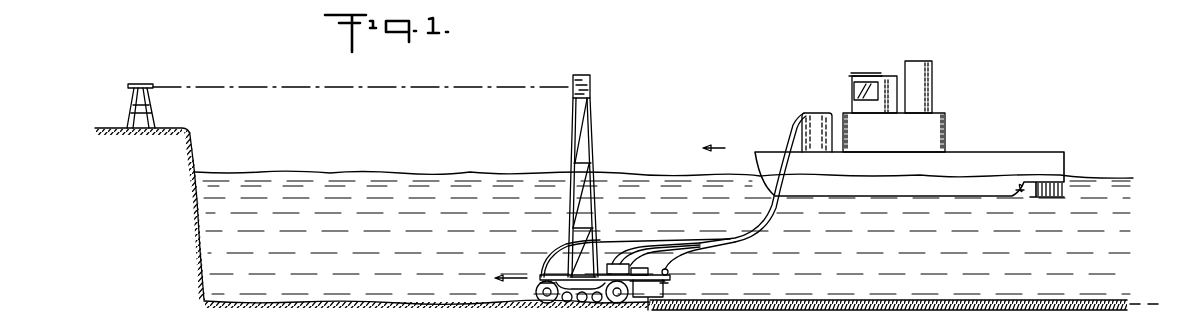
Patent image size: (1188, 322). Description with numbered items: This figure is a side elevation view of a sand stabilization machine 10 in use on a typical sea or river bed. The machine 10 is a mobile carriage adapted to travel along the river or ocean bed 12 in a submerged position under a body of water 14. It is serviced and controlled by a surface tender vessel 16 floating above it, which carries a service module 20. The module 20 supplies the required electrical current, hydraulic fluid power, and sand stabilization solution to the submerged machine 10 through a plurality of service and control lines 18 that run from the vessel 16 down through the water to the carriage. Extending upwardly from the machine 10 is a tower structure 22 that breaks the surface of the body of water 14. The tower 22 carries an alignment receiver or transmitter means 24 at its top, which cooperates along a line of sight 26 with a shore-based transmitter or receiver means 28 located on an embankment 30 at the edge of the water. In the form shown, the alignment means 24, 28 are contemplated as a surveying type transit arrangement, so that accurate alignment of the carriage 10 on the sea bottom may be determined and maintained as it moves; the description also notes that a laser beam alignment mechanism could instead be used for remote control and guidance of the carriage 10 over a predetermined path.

The sand stabilization machine 10 is at (551, 246).
The river or ocean bed 12 is at (373, 300).
The body of water 14 is at (415, 180).
The surface tender vessel 16 is at (999, 152).
The service and control lines 18 is at (726, 238).
The service module 20 is at (814, 113).
The tower structure 22 is at (592, 137).
The alignment receiver or transmitter means 24 is at (582, 75).
The line of sight 26 is at (452, 74).
The shore-based transmitter or receiver means 28 is at (145, 83).
The embankment 30 is at (101, 130).